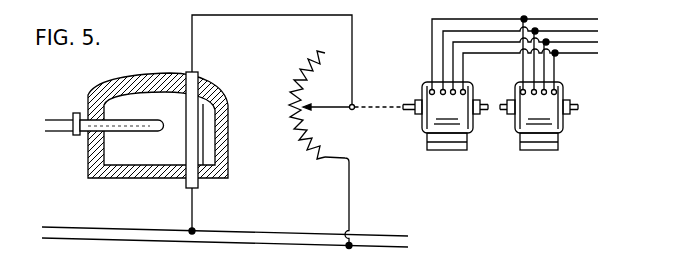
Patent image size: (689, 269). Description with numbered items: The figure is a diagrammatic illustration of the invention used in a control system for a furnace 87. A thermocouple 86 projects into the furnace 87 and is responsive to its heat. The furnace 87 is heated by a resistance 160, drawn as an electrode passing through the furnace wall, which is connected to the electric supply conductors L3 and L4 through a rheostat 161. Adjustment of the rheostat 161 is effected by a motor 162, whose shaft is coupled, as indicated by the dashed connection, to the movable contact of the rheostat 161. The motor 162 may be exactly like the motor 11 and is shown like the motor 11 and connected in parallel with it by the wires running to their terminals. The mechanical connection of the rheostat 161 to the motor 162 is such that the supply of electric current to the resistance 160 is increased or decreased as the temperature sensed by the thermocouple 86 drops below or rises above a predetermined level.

The furnace 87 is at (152, 78).
The thermocouple 86 is at (147, 126).
The resistance 160 is at (198, 78).
The rheostat 161 is at (304, 73).
The motor 162 is at (438, 100).
The motor 11 is at (551, 107).
The electric supply conductor L3 is at (280, 232).
The electric supply conductor L4 is at (281, 247).